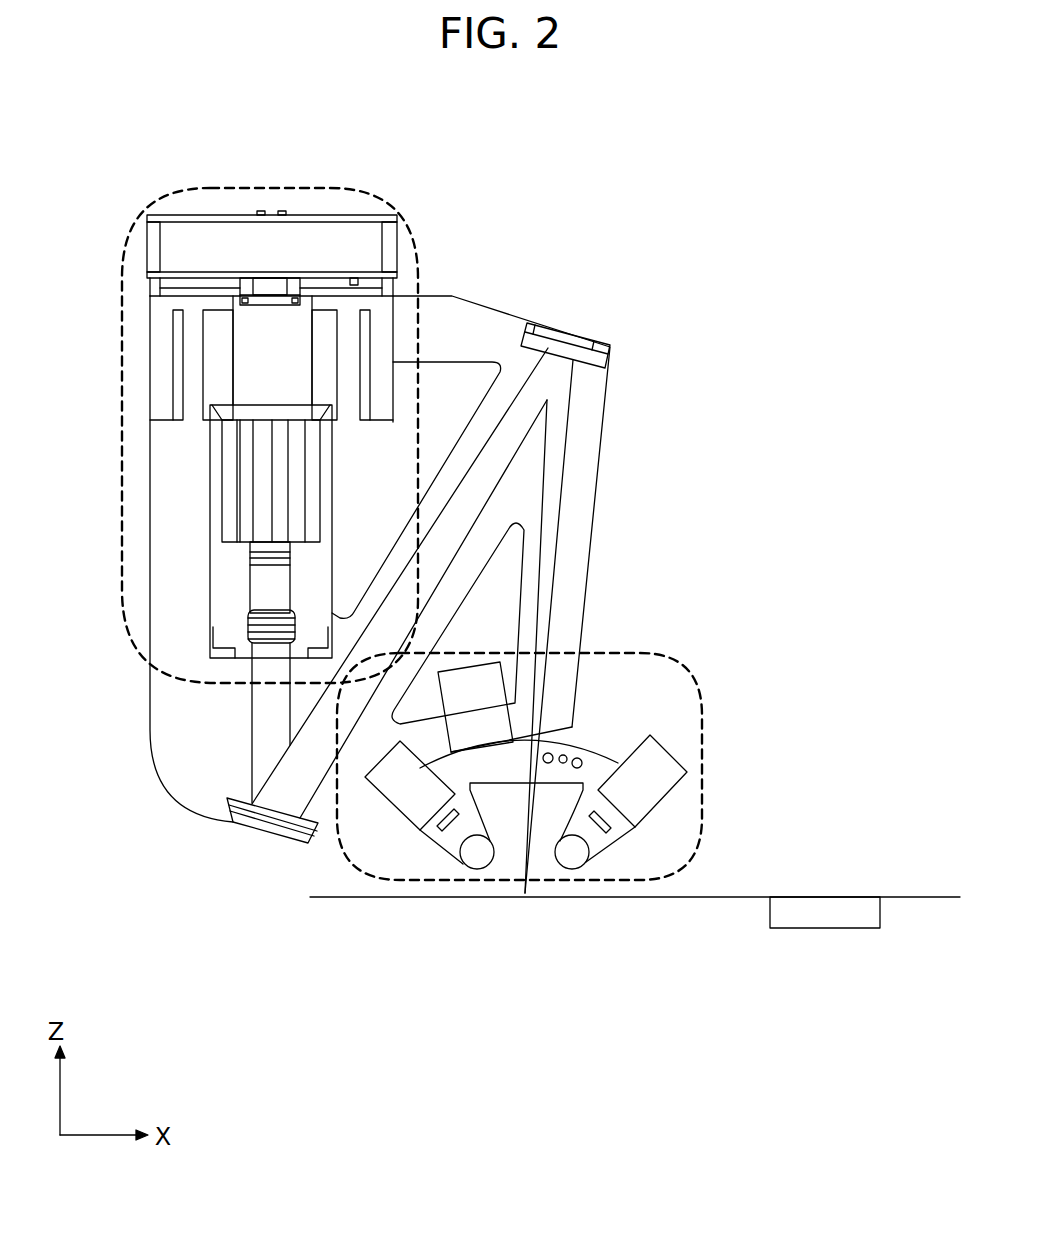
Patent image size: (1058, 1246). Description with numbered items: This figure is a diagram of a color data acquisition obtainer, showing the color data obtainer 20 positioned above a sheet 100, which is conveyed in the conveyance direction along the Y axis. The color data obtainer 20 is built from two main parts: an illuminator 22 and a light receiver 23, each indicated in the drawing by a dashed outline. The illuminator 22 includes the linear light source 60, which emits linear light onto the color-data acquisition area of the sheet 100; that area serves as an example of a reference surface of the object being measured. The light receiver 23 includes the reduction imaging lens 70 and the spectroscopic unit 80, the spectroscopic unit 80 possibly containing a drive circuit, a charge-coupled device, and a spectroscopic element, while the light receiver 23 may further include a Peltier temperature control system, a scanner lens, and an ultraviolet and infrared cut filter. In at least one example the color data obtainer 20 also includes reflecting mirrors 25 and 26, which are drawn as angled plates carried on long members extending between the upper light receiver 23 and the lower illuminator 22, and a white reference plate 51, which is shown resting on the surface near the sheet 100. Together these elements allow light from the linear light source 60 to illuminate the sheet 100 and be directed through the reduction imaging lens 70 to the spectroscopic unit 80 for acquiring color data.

The color data obtainer 20 is at (148, 168).
The illuminator 22 is at (690, 690).
The light receiver 23 is at (276, 186).
The reflecting mirror 25 is at (568, 338).
The reflecting mirror 26 is at (267, 826).
The white reference plate 51 is at (819, 930).
The linear light source 60 is at (600, 843).
The reduction imaging lens 70 is at (243, 480).
The spectroscopic unit 80 is at (203, 248).
The sheet 100 is at (733, 888).